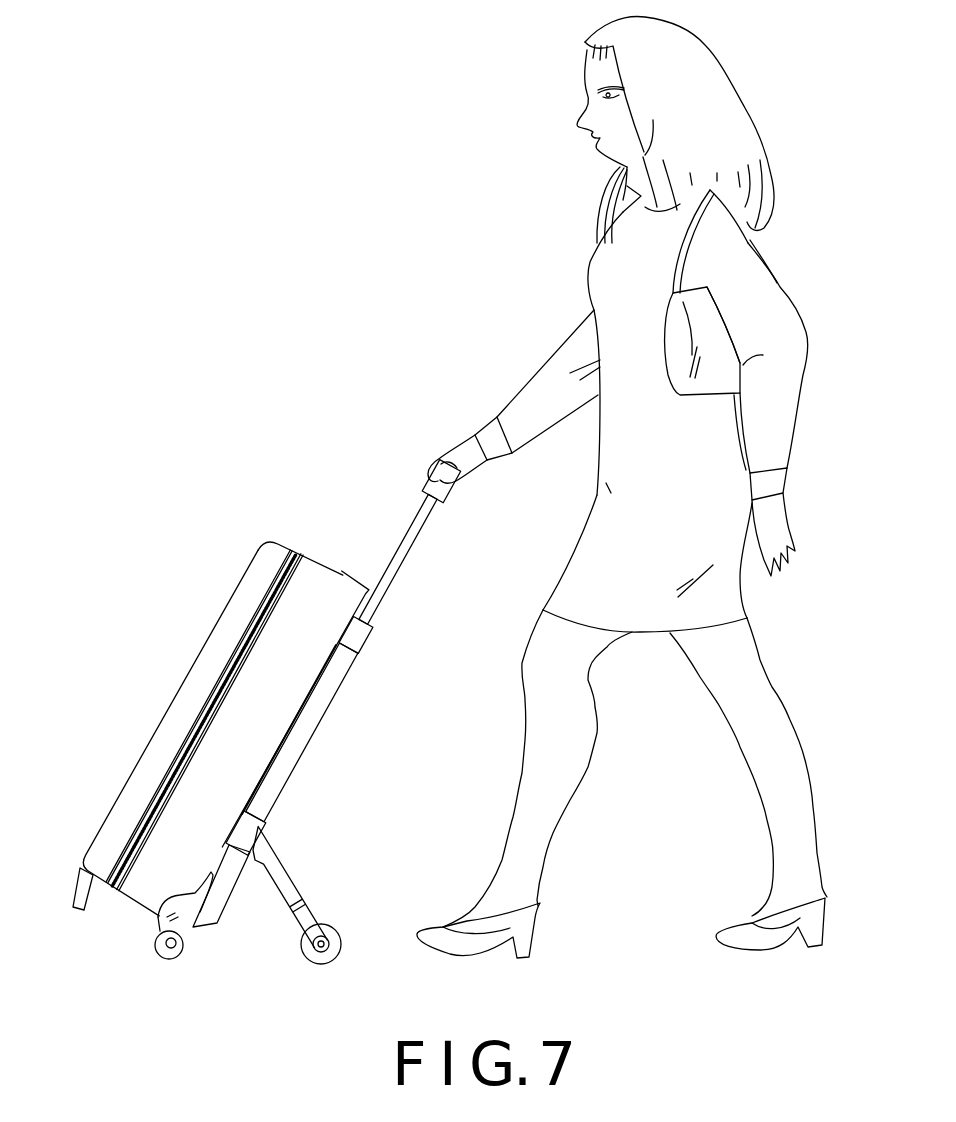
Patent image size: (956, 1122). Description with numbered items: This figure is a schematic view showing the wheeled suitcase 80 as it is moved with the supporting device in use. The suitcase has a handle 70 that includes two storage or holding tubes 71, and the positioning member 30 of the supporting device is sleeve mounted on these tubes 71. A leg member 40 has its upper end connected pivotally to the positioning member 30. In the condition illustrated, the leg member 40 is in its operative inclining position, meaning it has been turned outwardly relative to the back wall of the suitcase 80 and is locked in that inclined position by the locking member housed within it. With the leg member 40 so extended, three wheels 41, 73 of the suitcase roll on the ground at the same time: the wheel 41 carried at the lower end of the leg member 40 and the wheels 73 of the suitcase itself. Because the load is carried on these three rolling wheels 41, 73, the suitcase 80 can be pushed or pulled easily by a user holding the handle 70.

The wheeled suitcase 80 is at (249, 563).
The handle 70 is at (413, 547).
The storage or holding tubes 71 is at (320, 705).
The positioning member 30 is at (255, 825).
The leg member 40 is at (290, 877).
The wheel 41 is at (323, 940).
The wheels 73 is at (183, 947).